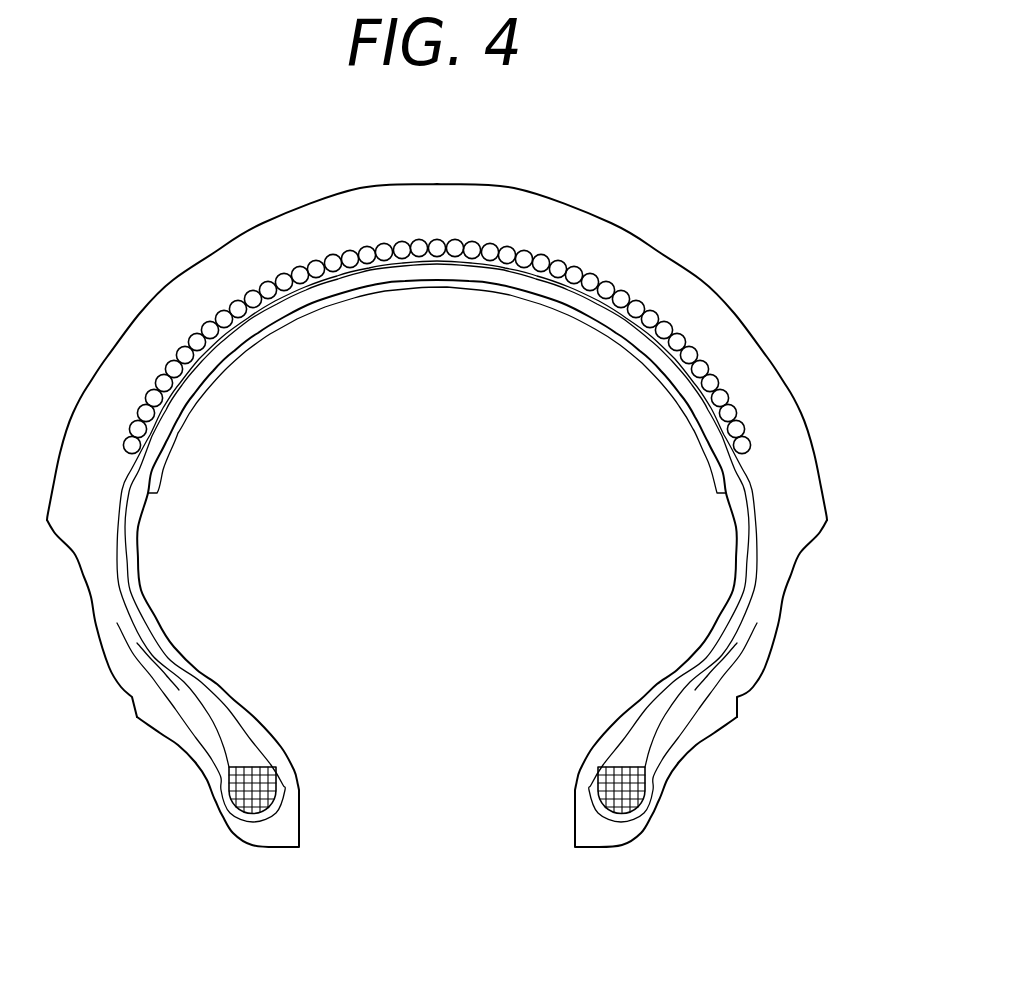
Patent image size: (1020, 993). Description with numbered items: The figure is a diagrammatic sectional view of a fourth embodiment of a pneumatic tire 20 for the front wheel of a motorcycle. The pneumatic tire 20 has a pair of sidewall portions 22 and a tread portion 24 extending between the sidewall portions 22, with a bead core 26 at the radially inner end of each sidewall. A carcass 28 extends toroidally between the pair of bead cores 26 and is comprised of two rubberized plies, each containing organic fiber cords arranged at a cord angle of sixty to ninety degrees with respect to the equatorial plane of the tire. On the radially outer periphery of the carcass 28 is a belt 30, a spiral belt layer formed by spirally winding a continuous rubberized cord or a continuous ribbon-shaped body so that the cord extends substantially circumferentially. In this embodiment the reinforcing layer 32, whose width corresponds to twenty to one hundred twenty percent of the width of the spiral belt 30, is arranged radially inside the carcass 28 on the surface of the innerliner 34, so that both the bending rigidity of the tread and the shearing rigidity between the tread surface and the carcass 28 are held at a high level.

The pneumatic tire 20 is at (655, 233).
The sidewall portion 22 is at (787, 597).
The tread portion 24 is at (538, 190).
The bead core 26 is at (628, 792).
The carcass 28 is at (753, 507).
The belt 30 is at (265, 291).
The reinforcing layer 32 is at (162, 470).
The innerliner 34 is at (139, 562).